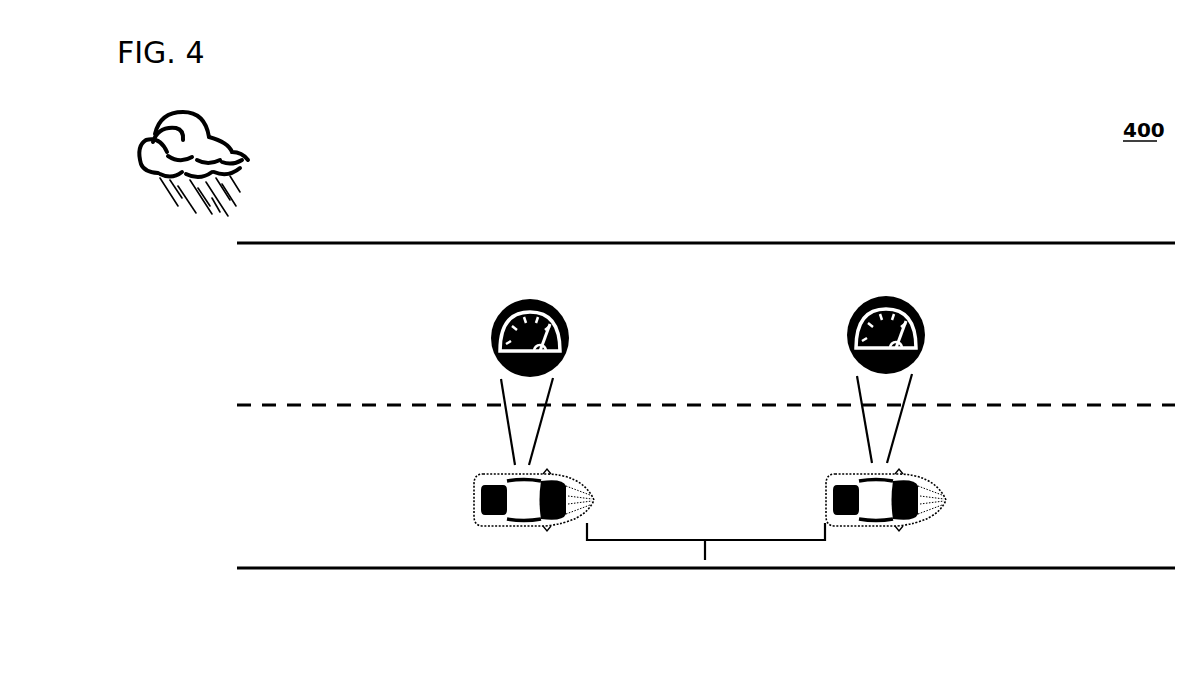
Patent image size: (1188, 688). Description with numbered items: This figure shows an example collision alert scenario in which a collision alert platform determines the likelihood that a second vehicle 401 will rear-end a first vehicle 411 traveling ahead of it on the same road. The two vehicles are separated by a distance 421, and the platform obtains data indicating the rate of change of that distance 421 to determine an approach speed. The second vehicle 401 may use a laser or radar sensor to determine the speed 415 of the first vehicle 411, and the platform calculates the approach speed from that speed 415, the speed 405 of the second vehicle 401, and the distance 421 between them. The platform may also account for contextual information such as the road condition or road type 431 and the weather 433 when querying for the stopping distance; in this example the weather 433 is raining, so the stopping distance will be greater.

The second vehicle 401 is at (480, 483).
The speed of the second vehicle 405 is at (491, 342).
The first vehicle 411 is at (947, 505).
The speed of the first vehicle 415 is at (848, 323).
The distance 421 is at (706, 564).
The road condition 431 is at (283, 457).
The weather 433 is at (243, 157).